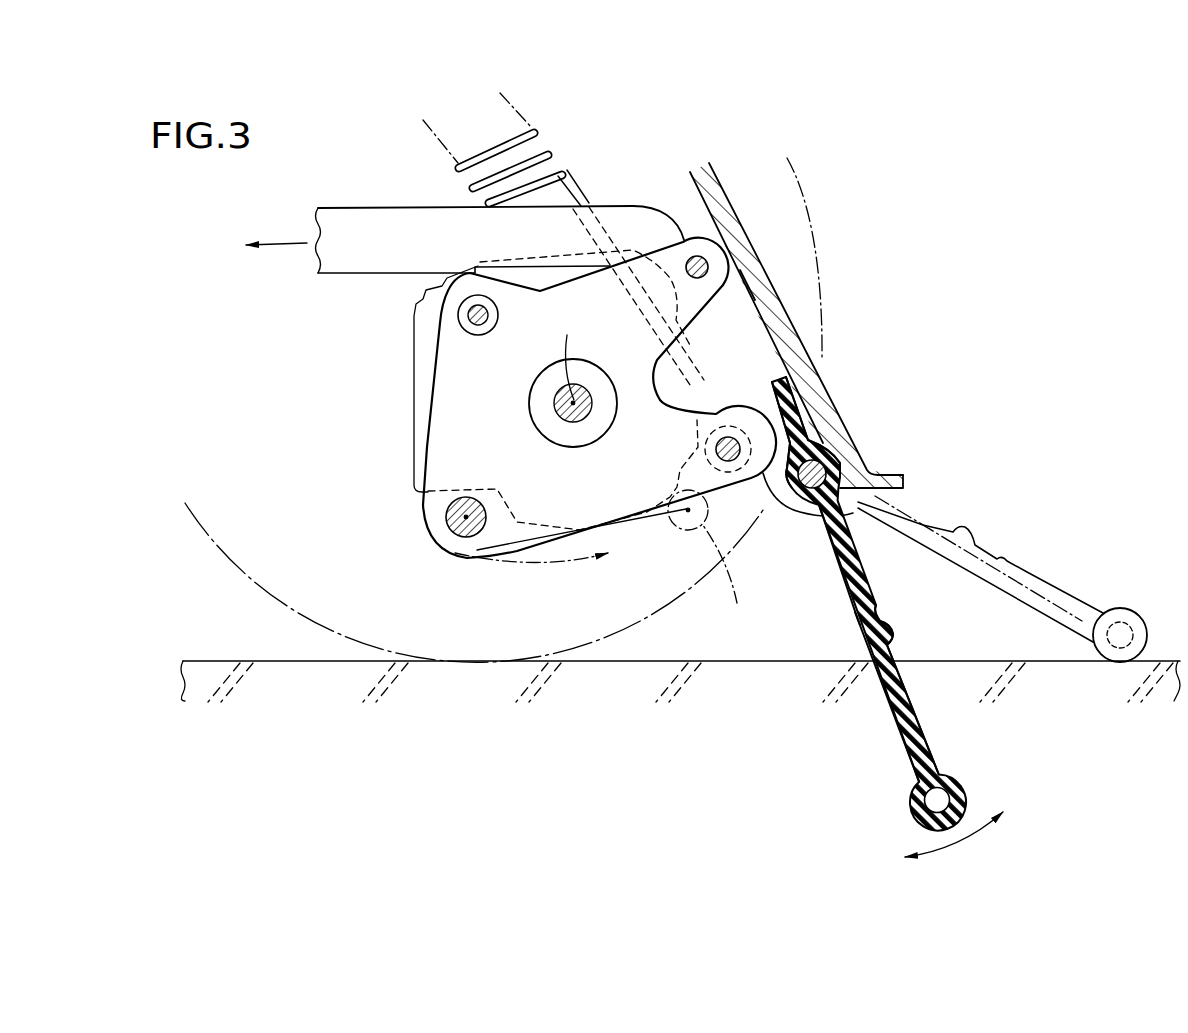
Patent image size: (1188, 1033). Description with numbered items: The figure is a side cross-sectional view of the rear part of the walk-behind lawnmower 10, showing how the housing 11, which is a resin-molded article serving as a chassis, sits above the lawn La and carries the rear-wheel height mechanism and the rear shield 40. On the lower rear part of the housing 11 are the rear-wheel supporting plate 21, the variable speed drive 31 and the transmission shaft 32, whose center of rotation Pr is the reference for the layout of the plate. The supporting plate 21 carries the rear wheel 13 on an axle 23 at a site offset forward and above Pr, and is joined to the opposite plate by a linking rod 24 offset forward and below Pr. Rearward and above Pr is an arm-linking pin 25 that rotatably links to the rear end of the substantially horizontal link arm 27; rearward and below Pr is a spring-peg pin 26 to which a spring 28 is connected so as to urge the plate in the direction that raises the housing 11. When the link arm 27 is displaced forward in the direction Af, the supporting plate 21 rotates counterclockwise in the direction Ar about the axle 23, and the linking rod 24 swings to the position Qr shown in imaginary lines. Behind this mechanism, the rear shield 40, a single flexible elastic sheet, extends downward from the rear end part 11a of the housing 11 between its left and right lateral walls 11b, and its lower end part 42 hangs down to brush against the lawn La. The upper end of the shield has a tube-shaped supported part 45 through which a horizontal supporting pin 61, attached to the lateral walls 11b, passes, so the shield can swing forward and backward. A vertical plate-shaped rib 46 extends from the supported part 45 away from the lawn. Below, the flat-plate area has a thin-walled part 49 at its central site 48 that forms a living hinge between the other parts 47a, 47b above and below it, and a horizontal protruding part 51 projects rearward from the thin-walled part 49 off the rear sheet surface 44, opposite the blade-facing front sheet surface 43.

The lawnmower 10 is at (1081, 207).
The housing 11 is at (762, 254).
The rear end part of the housing 11a is at (757, 330).
The lateral wall 11b is at (857, 460).
The rear wheel 13 is at (210, 537).
The rear-wheel supporting plate 21 is at (444, 378).
The axle 23 is at (466, 313).
The linking rod 24 is at (466, 518).
The arm-linking pin 25 is at (700, 255).
The spring-peg pin 26 is at (729, 437).
The link arm 27 is at (368, 217).
The spring 28 is at (550, 153).
The variable speed drive 31 is at (418, 438).
The transmission shaft 32 is at (555, 400).
The rear shield 40 is at (859, 549).
The lower end part 42 is at (957, 780).
The front sheet surface 43 is at (900, 733).
The rear sheet surface 44 is at (917, 713).
The supported part 45 is at (843, 455).
The rib 46 is at (787, 390).
The other part of the flat-plate area 47a is at (840, 567).
The other part of the flat-plate area 47b is at (900, 698).
The central site 48 is at (856, 621).
The thin-walled part 49 is at (867, 594).
The protruding part 51 is at (892, 624).
The supporting pin 61 is at (820, 452).